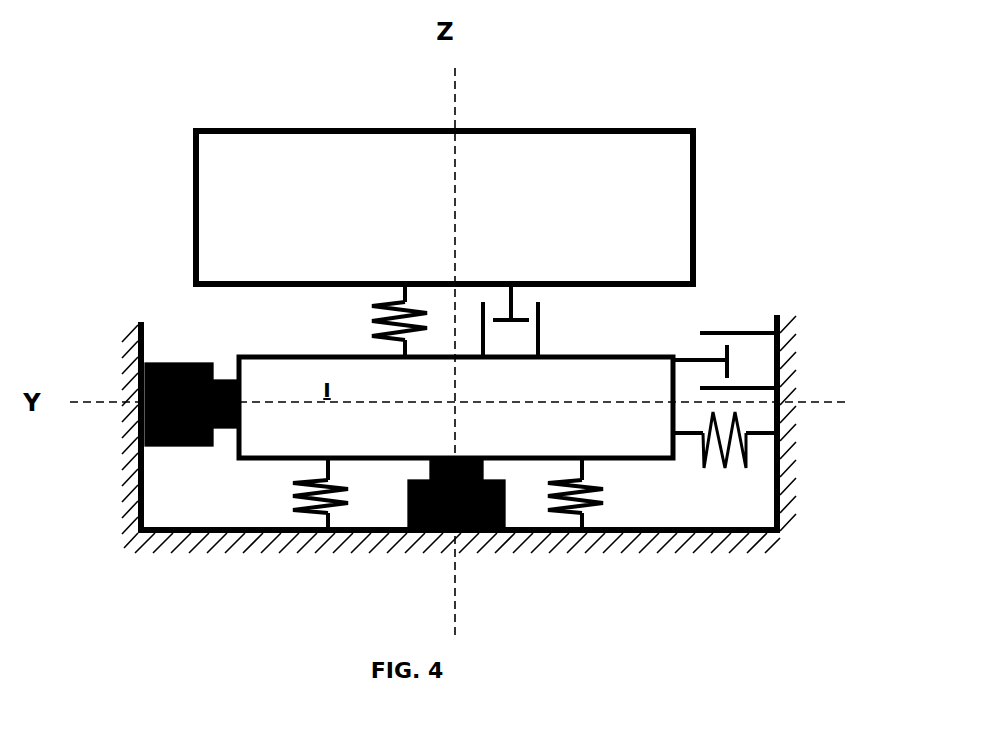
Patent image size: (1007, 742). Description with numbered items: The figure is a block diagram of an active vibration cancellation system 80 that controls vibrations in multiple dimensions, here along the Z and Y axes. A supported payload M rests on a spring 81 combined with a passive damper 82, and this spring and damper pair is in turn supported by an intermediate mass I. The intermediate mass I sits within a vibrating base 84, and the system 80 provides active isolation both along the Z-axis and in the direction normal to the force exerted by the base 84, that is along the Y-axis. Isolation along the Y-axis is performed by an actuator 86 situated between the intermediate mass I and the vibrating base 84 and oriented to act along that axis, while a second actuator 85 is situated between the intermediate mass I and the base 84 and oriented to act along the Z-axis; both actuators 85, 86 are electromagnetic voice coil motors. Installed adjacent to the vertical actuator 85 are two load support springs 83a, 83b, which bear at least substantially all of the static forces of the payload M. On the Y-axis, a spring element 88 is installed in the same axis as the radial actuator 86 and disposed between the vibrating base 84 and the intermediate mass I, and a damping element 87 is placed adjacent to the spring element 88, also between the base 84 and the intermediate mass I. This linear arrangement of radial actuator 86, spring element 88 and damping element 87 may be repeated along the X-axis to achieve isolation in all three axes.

The active vibration cancellation system 80 is at (557, 96).
The spring 81 is at (372, 337).
The passive damper 82 is at (542, 335).
The load support spring 83a is at (295, 512).
The load support spring 83b is at (603, 500).
The base 84 is at (138, 496).
The second actuator 85 is at (412, 508).
The actuator 86 is at (172, 363).
The damping element 87 is at (723, 332).
The spring element 88 is at (700, 460).